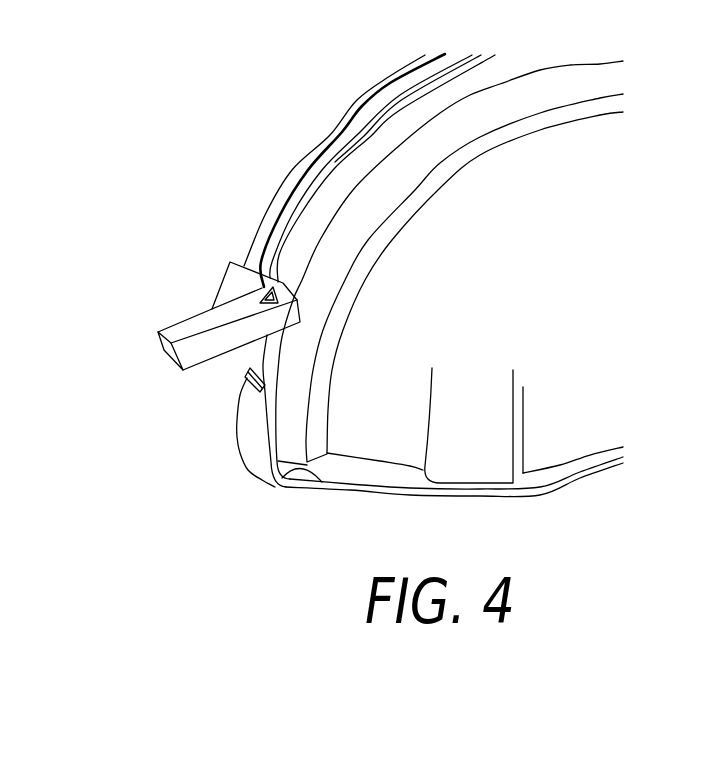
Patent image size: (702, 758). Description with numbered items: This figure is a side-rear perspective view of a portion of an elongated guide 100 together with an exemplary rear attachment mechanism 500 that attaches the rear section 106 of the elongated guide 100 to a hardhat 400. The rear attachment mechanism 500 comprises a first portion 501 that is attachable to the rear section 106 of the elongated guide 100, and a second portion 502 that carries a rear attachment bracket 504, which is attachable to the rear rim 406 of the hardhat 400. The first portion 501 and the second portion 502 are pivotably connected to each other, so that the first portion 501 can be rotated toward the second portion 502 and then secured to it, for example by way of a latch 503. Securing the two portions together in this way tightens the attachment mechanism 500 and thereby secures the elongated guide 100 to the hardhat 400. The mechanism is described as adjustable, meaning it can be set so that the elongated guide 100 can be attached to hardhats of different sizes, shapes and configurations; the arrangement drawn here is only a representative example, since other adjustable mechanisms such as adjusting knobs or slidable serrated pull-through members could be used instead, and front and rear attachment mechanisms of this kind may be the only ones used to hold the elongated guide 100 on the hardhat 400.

The elongated guide 100 is at (347, 100).
The rear section 106 is at (263, 213).
The hardhat 400 is at (520, 293).
The rear rim 406 is at (316, 476).
The rear attachment mechanism 500 is at (174, 414).
The first portion 501 is at (183, 323).
The second portion 502 is at (248, 456).
The latch 503 is at (246, 376).
The rear attachment bracket 504 is at (288, 489).